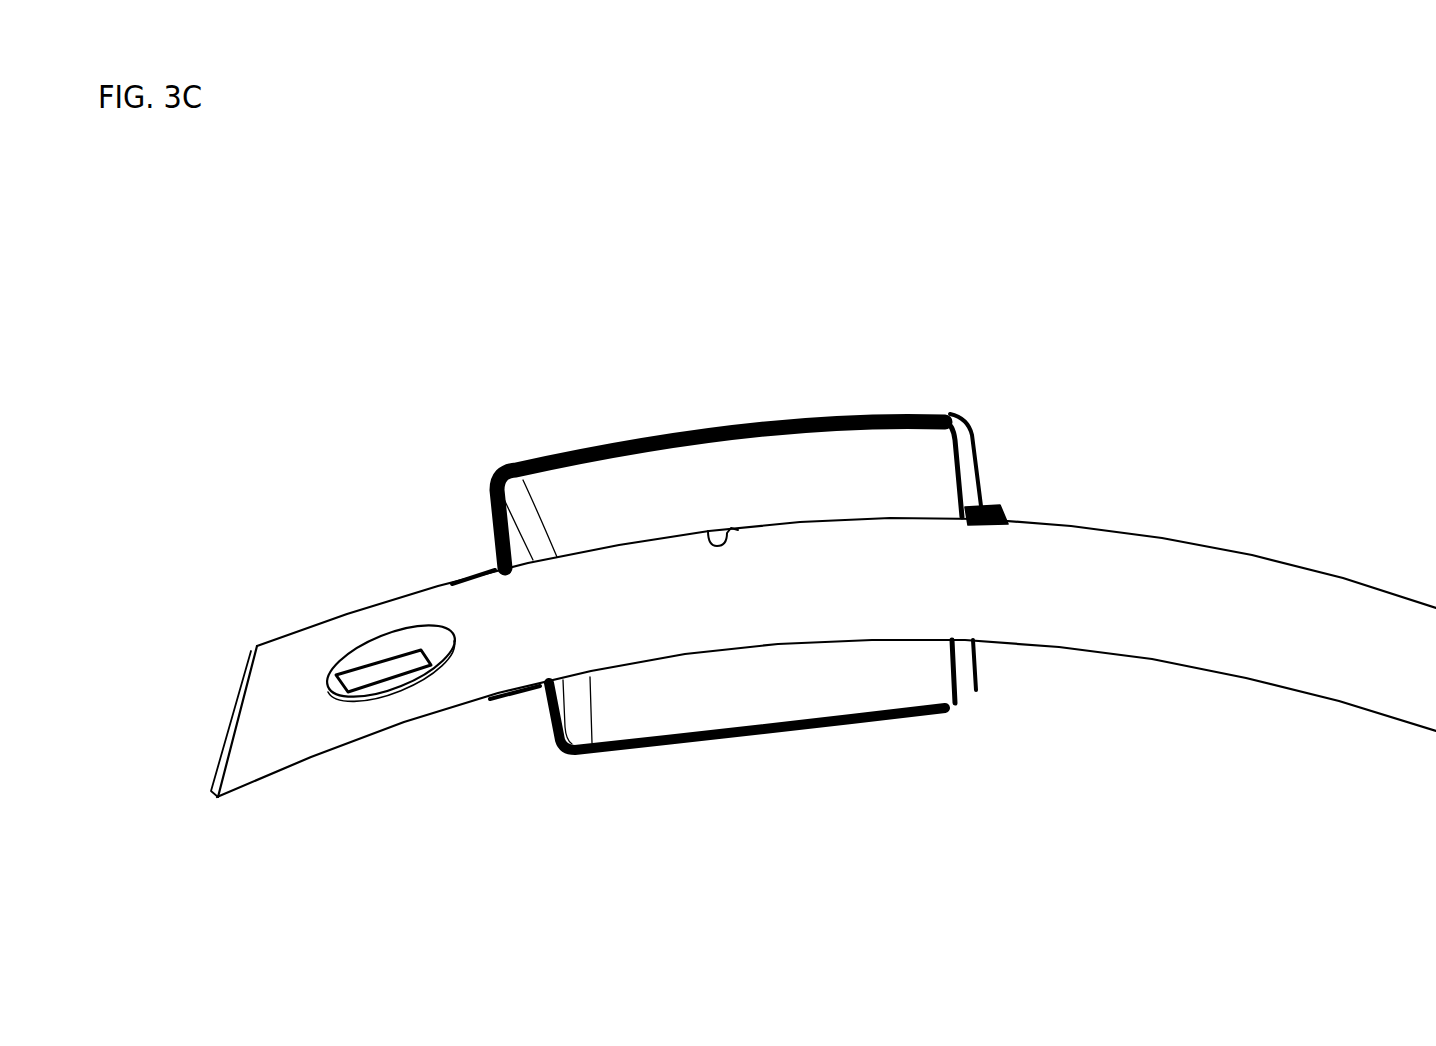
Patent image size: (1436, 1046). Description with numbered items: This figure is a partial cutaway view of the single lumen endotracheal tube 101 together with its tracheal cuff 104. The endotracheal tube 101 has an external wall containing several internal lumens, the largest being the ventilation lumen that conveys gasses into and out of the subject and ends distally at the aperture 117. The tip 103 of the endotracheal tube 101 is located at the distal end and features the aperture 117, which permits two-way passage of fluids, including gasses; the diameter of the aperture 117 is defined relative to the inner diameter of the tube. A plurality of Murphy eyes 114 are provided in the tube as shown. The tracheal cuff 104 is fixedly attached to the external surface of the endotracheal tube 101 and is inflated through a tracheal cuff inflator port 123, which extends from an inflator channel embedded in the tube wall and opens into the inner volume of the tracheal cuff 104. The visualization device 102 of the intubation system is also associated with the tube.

The endotracheal tube 101 is at (1160, 533).
The visualization device 102 is at (393, 672).
The tip 103 is at (433, 580).
The tracheal cuff 104 is at (797, 420).
The Murphy eyes 114 is at (357, 653).
The aperture 117 is at (235, 693).
The tracheal cuff inflator port 123 is at (717, 530).